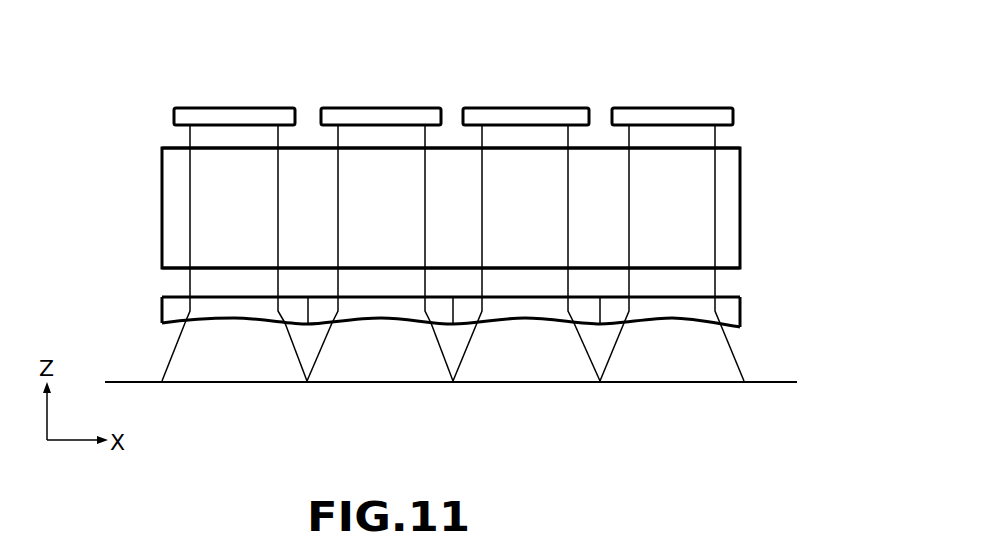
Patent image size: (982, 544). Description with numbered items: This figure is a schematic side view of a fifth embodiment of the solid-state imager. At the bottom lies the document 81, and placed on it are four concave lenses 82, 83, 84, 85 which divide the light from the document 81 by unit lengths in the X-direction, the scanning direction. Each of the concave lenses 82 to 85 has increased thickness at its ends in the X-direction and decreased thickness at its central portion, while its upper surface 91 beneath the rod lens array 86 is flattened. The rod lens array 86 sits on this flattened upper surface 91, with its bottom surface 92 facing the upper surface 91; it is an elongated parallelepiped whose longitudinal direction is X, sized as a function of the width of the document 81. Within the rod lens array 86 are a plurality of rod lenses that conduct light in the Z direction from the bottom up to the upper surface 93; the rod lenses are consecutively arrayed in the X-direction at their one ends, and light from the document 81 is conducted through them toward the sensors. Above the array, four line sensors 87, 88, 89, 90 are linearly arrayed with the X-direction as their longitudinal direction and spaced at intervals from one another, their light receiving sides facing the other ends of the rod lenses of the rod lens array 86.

The document 81 is at (768, 381).
The concave lens 82 is at (238, 312).
The concave lens 83 is at (383, 312).
The concave lens 84 is at (531, 312).
The concave lens 85 is at (677, 312).
The rod lens array 86 is at (733, 188).
The line sensor 87 is at (236, 108).
The line sensor 88 is at (380, 108).
The line sensor 89 is at (530, 108).
The line sensor 90 is at (672, 108).
The upper surface 91 is at (728, 295).
The bottom surface 92 is at (171, 270).
The upper surface 93 is at (172, 148).